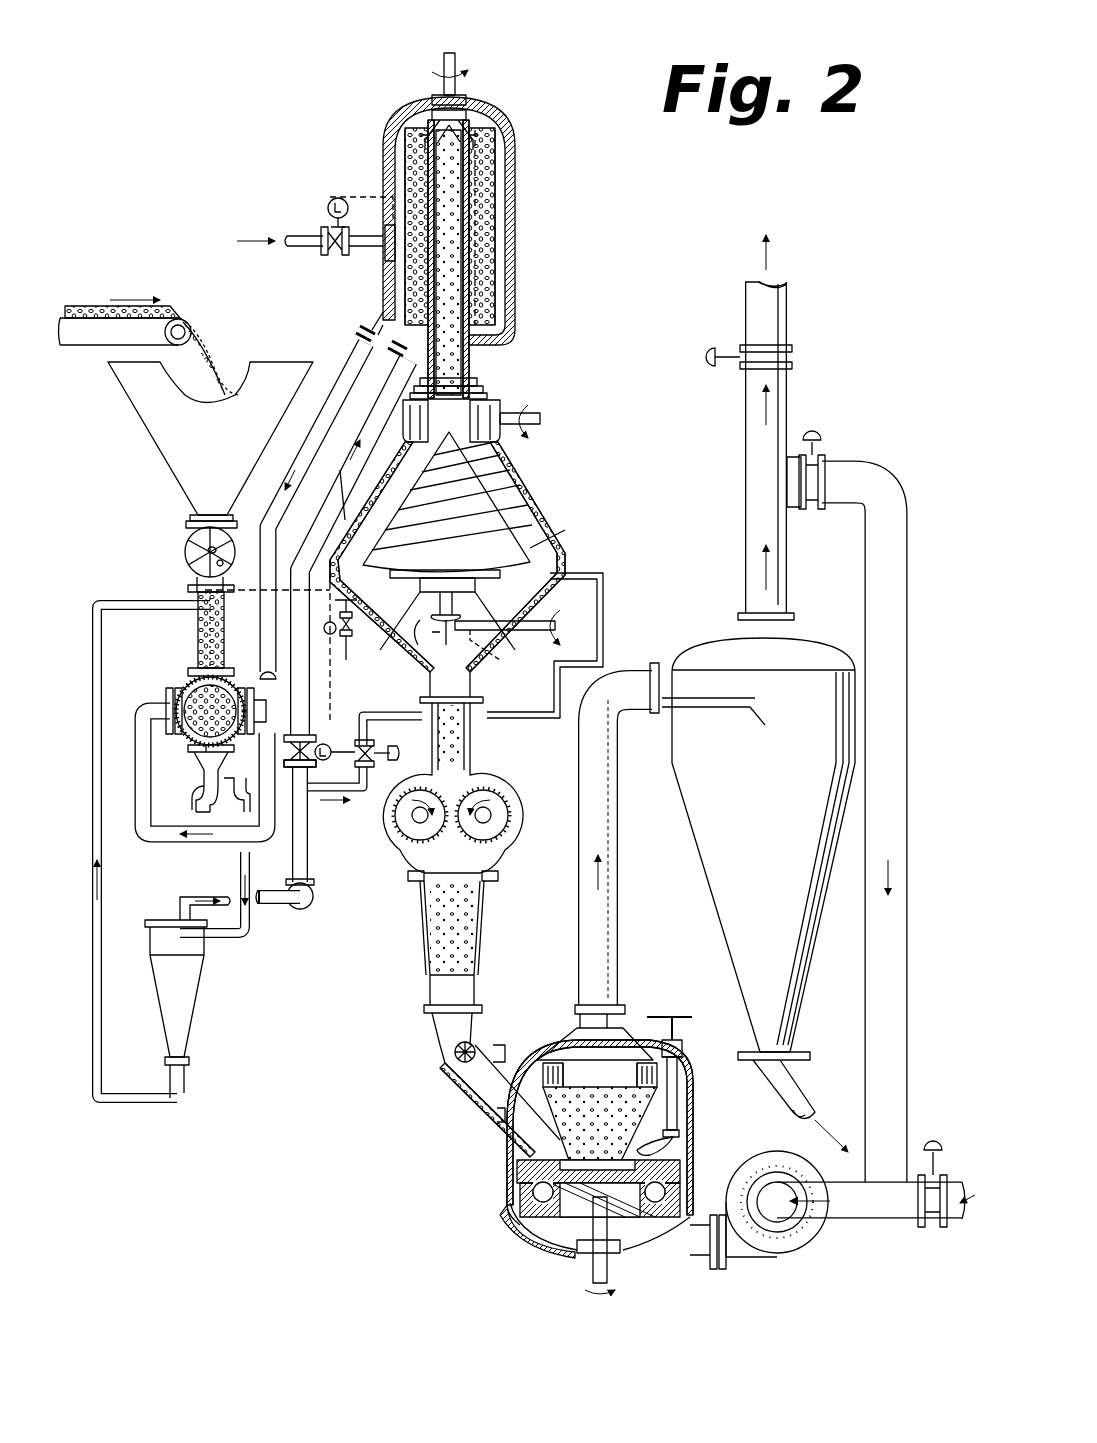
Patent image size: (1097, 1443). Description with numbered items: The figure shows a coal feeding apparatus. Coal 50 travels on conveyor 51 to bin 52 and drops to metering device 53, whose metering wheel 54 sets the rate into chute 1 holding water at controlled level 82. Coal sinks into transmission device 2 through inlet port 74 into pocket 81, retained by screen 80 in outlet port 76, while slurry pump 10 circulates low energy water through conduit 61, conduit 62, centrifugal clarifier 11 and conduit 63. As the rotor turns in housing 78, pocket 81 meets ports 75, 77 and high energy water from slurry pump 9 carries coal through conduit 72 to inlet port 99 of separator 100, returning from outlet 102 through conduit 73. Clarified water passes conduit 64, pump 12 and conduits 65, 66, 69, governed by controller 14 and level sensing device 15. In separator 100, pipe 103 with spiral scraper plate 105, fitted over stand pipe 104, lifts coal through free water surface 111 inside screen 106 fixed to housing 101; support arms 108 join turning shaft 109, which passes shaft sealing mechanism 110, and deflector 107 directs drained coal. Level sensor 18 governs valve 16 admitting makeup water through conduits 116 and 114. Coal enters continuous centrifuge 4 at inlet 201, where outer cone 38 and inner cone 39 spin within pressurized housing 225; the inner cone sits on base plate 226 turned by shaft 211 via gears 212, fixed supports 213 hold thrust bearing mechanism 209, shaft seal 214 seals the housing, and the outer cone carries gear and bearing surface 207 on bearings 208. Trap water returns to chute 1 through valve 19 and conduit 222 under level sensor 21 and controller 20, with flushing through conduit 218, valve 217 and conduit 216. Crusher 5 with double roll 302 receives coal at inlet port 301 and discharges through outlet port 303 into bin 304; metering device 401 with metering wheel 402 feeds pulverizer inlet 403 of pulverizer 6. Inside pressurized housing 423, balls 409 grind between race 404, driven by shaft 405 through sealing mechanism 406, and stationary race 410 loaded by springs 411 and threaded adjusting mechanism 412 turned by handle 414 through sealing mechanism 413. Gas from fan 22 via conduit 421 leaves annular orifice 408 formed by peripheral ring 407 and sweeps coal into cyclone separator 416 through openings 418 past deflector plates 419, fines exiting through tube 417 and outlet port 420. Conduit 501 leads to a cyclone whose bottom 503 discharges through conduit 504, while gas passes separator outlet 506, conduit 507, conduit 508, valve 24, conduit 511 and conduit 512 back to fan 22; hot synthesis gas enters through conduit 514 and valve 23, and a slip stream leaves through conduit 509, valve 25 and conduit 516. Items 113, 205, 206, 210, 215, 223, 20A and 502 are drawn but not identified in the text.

The chute 1 is at (210, 620).
The transmission device 2 is at (160, 685).
The continuous centrifuge 4 is at (428, 576).
The crusher 5 is at (525, 815).
The pulverizer 6 is at (505, 1140).
The slurry pump 9 is at (160, 712).
The slurry pump 10 is at (195, 800).
The centrifugal clarifier 11 is at (190, 993).
The pump 12 is at (314, 898).
The controller 14 is at (345, 752).
The level sensing device 15 is at (190, 588).
The valve 16 is at (322, 252).
The level sensor 18 is at (378, 192).
The valve 19 is at (350, 640).
The controller 20 is at (340, 662).
The level sensor 21 is at (345, 560).
The fan 22 is at (775, 1255).
The controllable valve 23 is at (948, 1145).
The valve 24 is at (826, 462).
The controllable valve 25 is at (795, 357).
The outer cone 38 is at (535, 432).
The inner cone 39 is at (510, 535).
The coal 50 is at (112, 308).
The conveyor 51 is at (95, 350).
The bin 52 is at (150, 440).
The metering device 53 is at (195, 532).
The metering wheel 54 is at (198, 548).
The conduit 61 is at (200, 770).
The conduit 62 is at (242, 862).
The conduit 63 is at (175, 1100).
The conduit 64 is at (290, 912).
The conduit 65 is at (308, 855).
The conduit 66 is at (312, 770).
The conduit 69 is at (318, 720).
The conduit 72 is at (312, 680).
The conduit 73 is at (345, 375).
The inlet port 74 is at (188, 670).
The port 75 is at (230, 752).
The outlet port 76 is at (240, 780).
The port 77 is at (160, 738).
The housing 78 is at (252, 712).
The screen 80 is at (190, 752).
The through-going pocket 81 is at (255, 712).
The controlled water level 82 is at (228, 618).
The inlet port 99 is at (360, 338).
The separator 100 is at (422, 214).
The housing 101 is at (392, 120).
The outlet 102 is at (372, 322).
The pipe 103 is at (490, 275).
The stand pipe 104 is at (470, 345).
The scraper plate 105 is at (490, 300).
The screen 106 is at (497, 240).
The deflector 107 is at (470, 115).
The support arms 108 is at (428, 100).
The turning shaft 109 is at (440, 68).
The shaft sealing mechanism 110 is at (460, 92).
The free water surface 111 is at (505, 212).
The gauge 113 is at (330, 200).
The conduit 114 is at (355, 255).
The conduit 116 is at (305, 232).
The continuous centrifuge inlet 201 is at (480, 378).
The drive shaft 205 is at (540, 418).
The collar 206 is at (500, 425).
The gear and bearing surface 207 is at (485, 390).
The bearings 208 is at (488, 396).
The thrust bearing mechanism 209 is at (425, 595).
The shaft 210 is at (500, 630).
The shaft 211 is at (452, 628).
The gears 212 is at (470, 600).
The fixed supports 213 is at (490, 652).
The shaft seal 214 is at (545, 638).
The housing wall 215 is at (548, 558).
The conduit 216 is at (580, 590).
The valve 217 is at (380, 735).
The conduit 218 is at (335, 800).
The conduit 222 is at (198, 630).
The outlet pipe 223 is at (475, 690).
The pressurized housing 225 is at (530, 480).
The base plate 226 is at (420, 578).
The rotating cone 20A is at (489, 502).
The inlet port 301 is at (470, 755).
The double roll 302 is at (477, 818).
The outlet port 303 is at (490, 865).
The bin 304 is at (478, 935).
The metering device 401 is at (432, 1040).
The metering wheel 402 is at (440, 1057).
The pulverizer inlet 403 is at (460, 1110).
The race 404 is at (580, 1245).
The shaft 405 is at (545, 1255).
The sealing mechanism 406 is at (585, 1255).
The peripheral ring 407 is at (530, 1195).
The annular orifice 408 is at (520, 1195).
The balls 409 is at (682, 1170).
The race 410 is at (672, 1150).
The springs 411 is at (682, 1132).
The threaded adjusting mechanism 412 is at (678, 1095).
The sealing mechanism 413 is at (684, 1045).
The handle 414 is at (680, 1018).
The cyclone separator 416 is at (560, 1030).
The tube 417 is at (612, 1010).
The openings 418 is at (650, 1062).
The deflector plates 419 is at (550, 1062).
The outlet port 420 is at (578, 1005).
The conduit 421 is at (700, 1262).
The pressurized housing 423 is at (685, 1055).
The conduit 501 is at (600, 843).
The flange 502 is at (665, 660).
The cyclone separator bottom 503 is at (800, 975).
The conduit 504 is at (795, 1088).
The separator outlet 506 is at (794, 630).
The conduit 507 is at (752, 525).
The conduit 508 is at (812, 440).
The conduit 509 is at (748, 410).
The conduit 511 is at (908, 805).
The conduit 512 is at (882, 1218).
The conduit 514 is at (958, 1222).
The conduit 516 is at (790, 310).